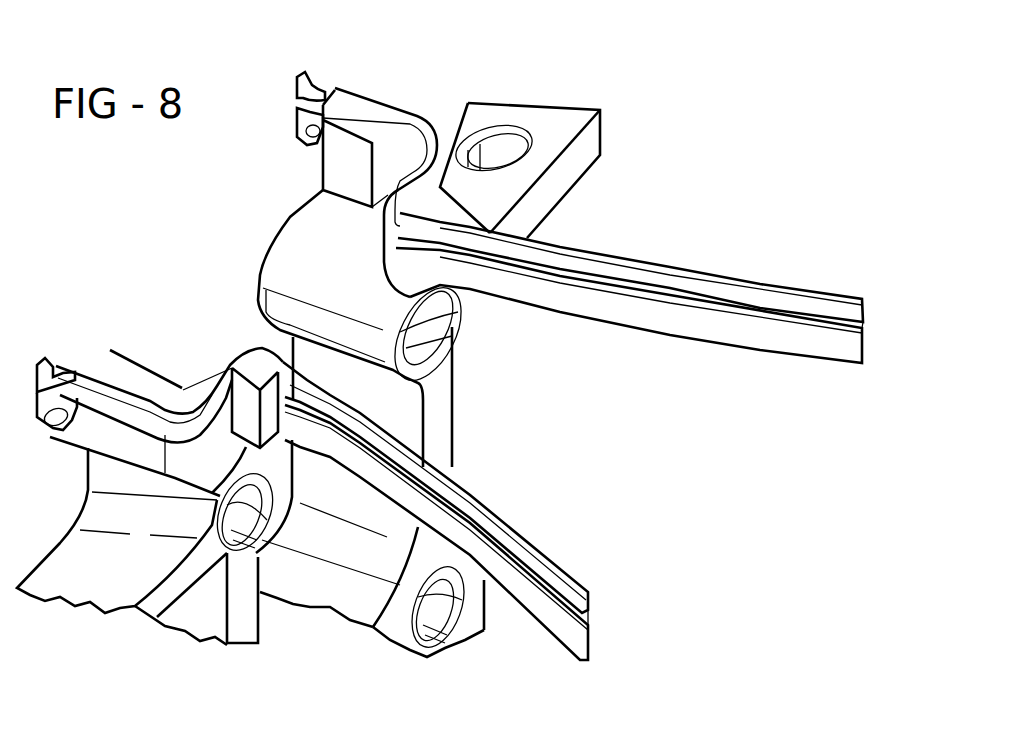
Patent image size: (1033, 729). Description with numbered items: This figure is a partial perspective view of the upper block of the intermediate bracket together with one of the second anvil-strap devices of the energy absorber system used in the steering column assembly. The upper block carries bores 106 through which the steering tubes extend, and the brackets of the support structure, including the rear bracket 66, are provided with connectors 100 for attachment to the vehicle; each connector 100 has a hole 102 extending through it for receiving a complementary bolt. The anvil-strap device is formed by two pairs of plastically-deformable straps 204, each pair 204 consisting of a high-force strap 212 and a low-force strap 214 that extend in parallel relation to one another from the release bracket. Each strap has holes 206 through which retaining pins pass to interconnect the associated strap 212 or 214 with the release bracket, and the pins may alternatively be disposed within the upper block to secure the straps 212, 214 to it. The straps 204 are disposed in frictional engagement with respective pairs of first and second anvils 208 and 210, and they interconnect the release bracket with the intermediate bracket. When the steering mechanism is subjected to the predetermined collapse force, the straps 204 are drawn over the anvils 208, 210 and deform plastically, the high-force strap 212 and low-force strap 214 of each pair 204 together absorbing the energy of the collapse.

The rear bracket 66 is at (452, 430).
The connector 100 is at (46, 556).
The hole 102 is at (520, 140).
The bore 106 is at (453, 327).
The pair of plastically-deformable straps 204 is at (778, 344).
The hole 206 is at (322, 123).
The first anvil 208 is at (473, 172).
The second anvil 210 is at (335, 165).
The high-force strap 212 is at (670, 330).
The low-force strap 214 is at (677, 272).